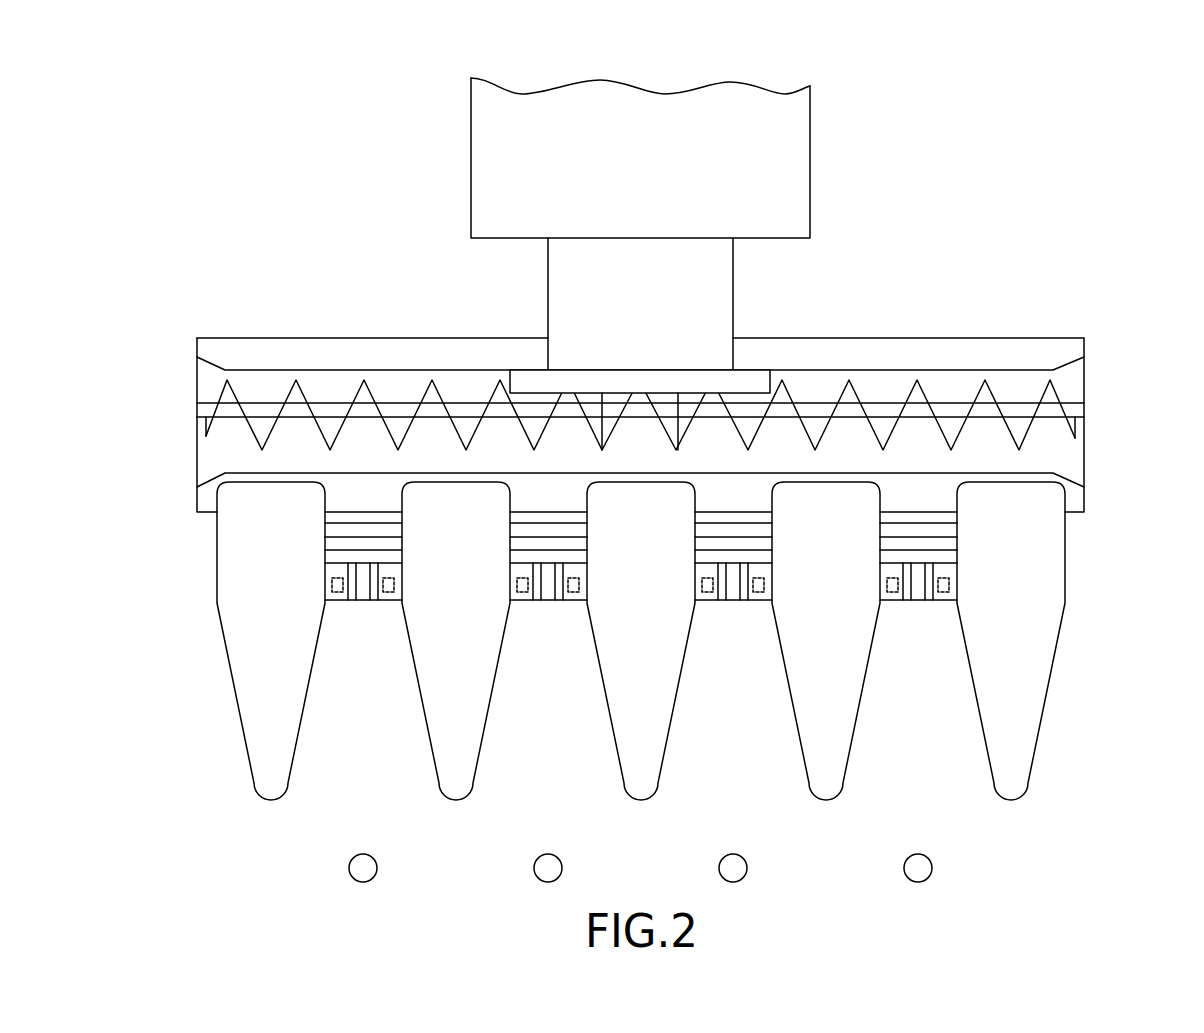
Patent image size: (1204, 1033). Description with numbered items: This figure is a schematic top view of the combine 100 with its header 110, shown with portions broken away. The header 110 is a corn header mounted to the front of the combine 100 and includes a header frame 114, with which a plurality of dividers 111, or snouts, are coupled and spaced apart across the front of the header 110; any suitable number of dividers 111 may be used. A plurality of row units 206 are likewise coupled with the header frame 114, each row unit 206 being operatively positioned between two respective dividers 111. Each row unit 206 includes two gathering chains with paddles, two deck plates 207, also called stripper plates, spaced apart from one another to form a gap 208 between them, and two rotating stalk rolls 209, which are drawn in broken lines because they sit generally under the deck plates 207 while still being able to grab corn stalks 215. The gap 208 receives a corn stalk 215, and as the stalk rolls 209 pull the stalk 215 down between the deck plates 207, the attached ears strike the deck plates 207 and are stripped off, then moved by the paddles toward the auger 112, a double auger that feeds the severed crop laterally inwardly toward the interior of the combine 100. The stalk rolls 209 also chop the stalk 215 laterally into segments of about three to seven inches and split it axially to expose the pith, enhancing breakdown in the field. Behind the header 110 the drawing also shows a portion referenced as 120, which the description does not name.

The combine 100 is at (318, 118).
The header 110 is at (1073, 284).
The dividers 111 is at (292, 768).
The auger 112 is at (330, 412).
The header frame 114 is at (237, 338).
The handle stem 120 is at (548, 282).
The row units 206 is at (728, 510).
The deck plates 207 is at (386, 570).
The gap 208 is at (733, 600).
The stalk rolls 209 is at (330, 586).
The corn stalks 215 is at (352, 860).